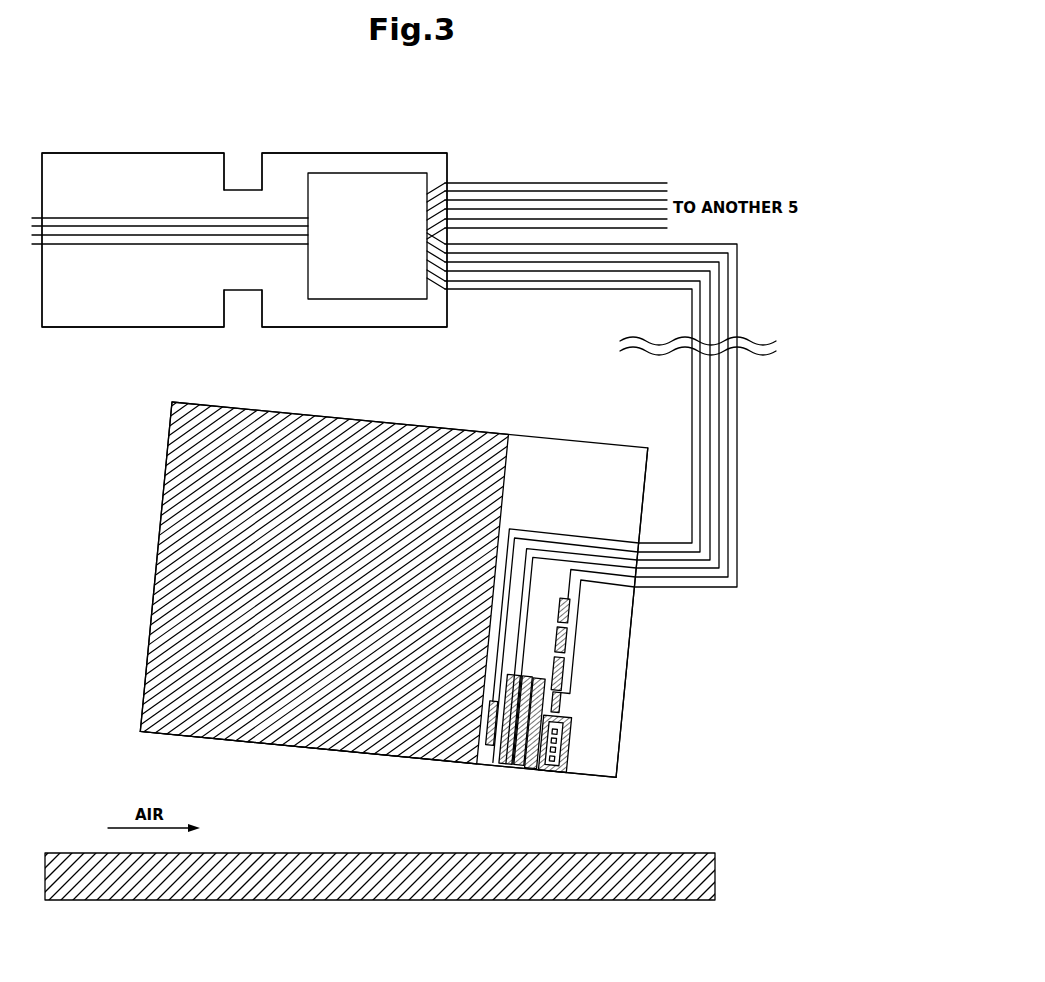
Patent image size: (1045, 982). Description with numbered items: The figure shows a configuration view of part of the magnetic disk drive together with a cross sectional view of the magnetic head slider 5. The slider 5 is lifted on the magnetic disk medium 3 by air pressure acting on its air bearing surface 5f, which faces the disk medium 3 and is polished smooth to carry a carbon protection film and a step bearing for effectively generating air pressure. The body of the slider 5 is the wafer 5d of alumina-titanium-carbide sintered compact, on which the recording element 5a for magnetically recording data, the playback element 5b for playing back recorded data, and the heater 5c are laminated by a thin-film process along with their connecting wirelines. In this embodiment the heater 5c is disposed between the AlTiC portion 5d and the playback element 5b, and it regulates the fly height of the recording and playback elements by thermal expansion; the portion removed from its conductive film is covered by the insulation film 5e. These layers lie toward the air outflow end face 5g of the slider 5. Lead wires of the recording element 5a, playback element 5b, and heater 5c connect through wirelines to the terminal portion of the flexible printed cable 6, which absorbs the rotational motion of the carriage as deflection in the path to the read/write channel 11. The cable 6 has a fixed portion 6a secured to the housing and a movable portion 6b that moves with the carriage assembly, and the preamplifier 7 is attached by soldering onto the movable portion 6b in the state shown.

The magnetic disk medium 3 is at (378, 853).
The magnetic head slider 5 is at (436, 403).
The recording element 5a is at (562, 781).
The playback element 5b is at (519, 781).
The heater 5c is at (488, 752).
The wafer (AlTiC portion) 5d is at (278, 680).
The insulation film 5e is at (593, 717).
The air bearing surface 5f is at (305, 752).
The air outflow end face 5g is at (633, 608).
The flexible printed cable 6 is at (135, 153).
The fixed portion 6a is at (63, 165).
The movable portion 6b is at (403, 163).
The preamplifier 7 is at (346, 173).
The read/write channel 11 is at (78, 208).